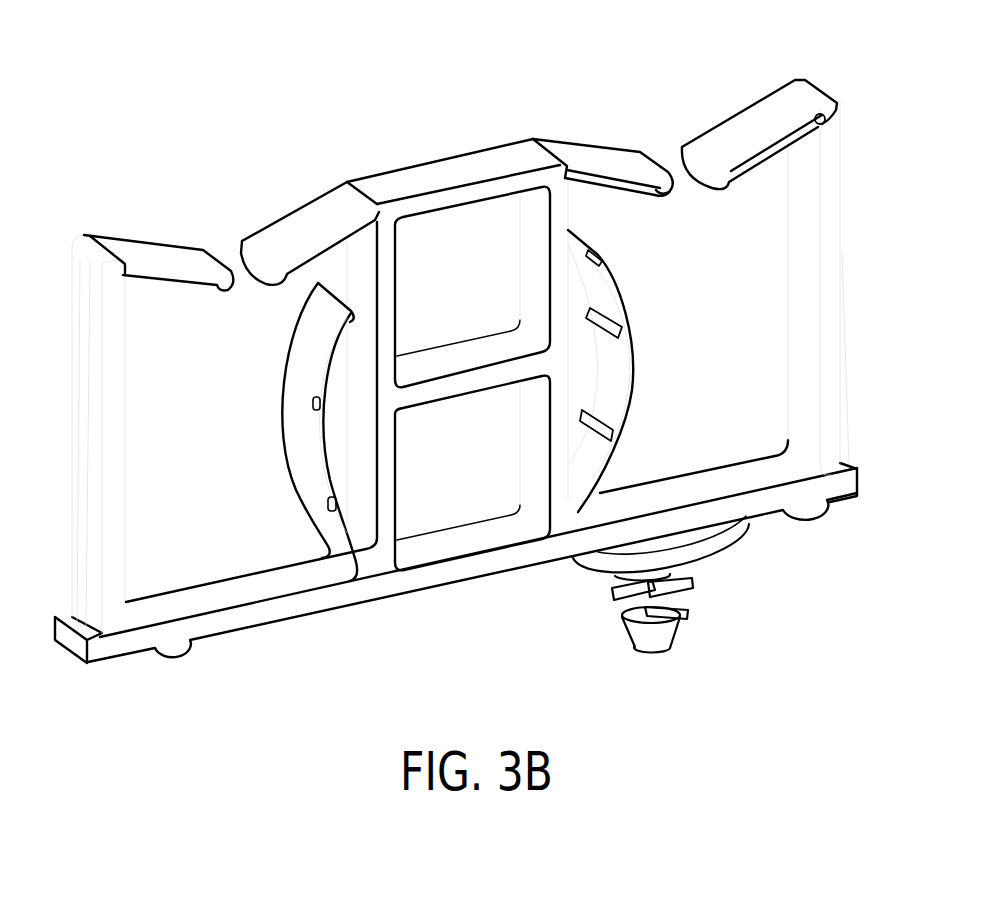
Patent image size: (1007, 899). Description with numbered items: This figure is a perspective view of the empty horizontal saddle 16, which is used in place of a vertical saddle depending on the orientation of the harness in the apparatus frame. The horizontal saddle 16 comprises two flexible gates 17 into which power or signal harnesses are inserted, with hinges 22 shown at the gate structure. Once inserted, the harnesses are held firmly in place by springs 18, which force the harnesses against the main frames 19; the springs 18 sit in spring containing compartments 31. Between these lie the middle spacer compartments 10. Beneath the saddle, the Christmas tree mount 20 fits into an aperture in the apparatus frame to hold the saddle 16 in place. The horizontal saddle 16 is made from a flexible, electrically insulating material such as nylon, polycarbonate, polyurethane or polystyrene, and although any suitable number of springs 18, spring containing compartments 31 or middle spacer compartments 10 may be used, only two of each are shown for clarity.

The middle spacer compartments 10 is at (440, 228).
The horizontal saddle 16 is at (497, 114).
The flexible gates 17 is at (228, 253).
The springs 18 is at (290, 405).
The main frames 19 is at (117, 370).
The Christmas tree mount 20 is at (687, 618).
The hinges 22 is at (123, 273).
The spring containing compartments 31 is at (138, 350).